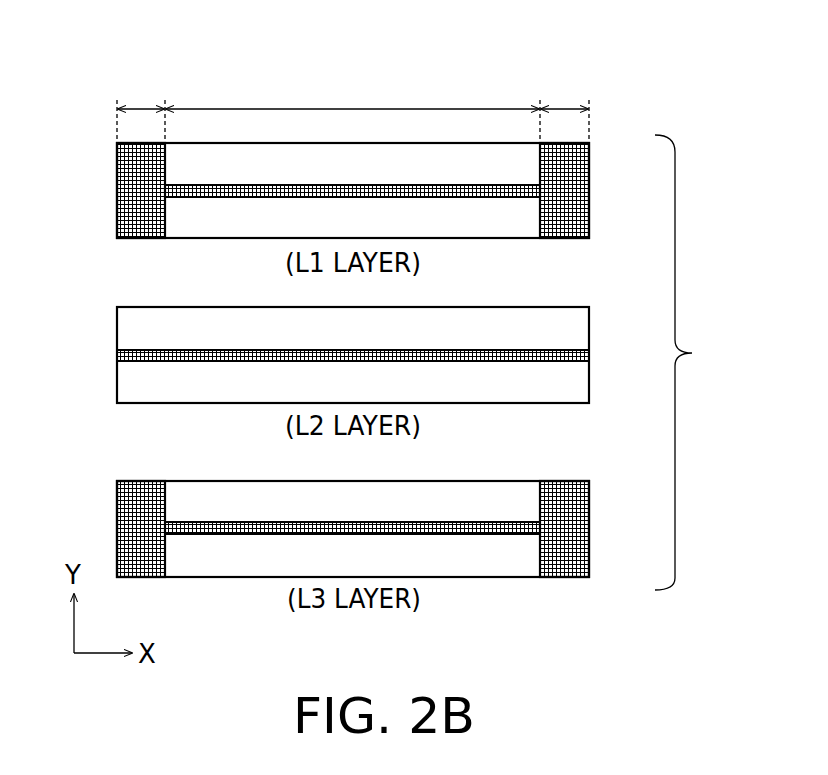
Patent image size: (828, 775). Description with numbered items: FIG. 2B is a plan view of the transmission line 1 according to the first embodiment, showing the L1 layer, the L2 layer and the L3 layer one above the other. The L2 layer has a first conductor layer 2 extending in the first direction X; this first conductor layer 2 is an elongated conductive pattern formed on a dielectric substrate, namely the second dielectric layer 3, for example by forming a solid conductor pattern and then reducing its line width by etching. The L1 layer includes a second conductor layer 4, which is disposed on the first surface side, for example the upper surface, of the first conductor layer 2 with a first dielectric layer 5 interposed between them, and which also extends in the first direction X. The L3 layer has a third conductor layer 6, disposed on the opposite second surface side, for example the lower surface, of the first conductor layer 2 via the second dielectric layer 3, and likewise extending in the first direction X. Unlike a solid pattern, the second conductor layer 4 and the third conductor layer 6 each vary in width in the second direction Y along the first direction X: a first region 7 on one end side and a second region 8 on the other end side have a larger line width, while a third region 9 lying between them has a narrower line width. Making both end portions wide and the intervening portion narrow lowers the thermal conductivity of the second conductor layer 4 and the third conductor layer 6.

The transmission line 1 is at (685, 362).
The first conductor layer 2 is at (580, 352).
The second dielectric layer 3 is at (580, 382).
The second conductor layer 4 is at (580, 190).
The first dielectric layer 5 is at (476, 222).
The third conductor layer 6 is at (580, 532).
The first region 7 is at (141, 107).
The second region 8 is at (567, 107).
The third region 9 is at (341, 107).